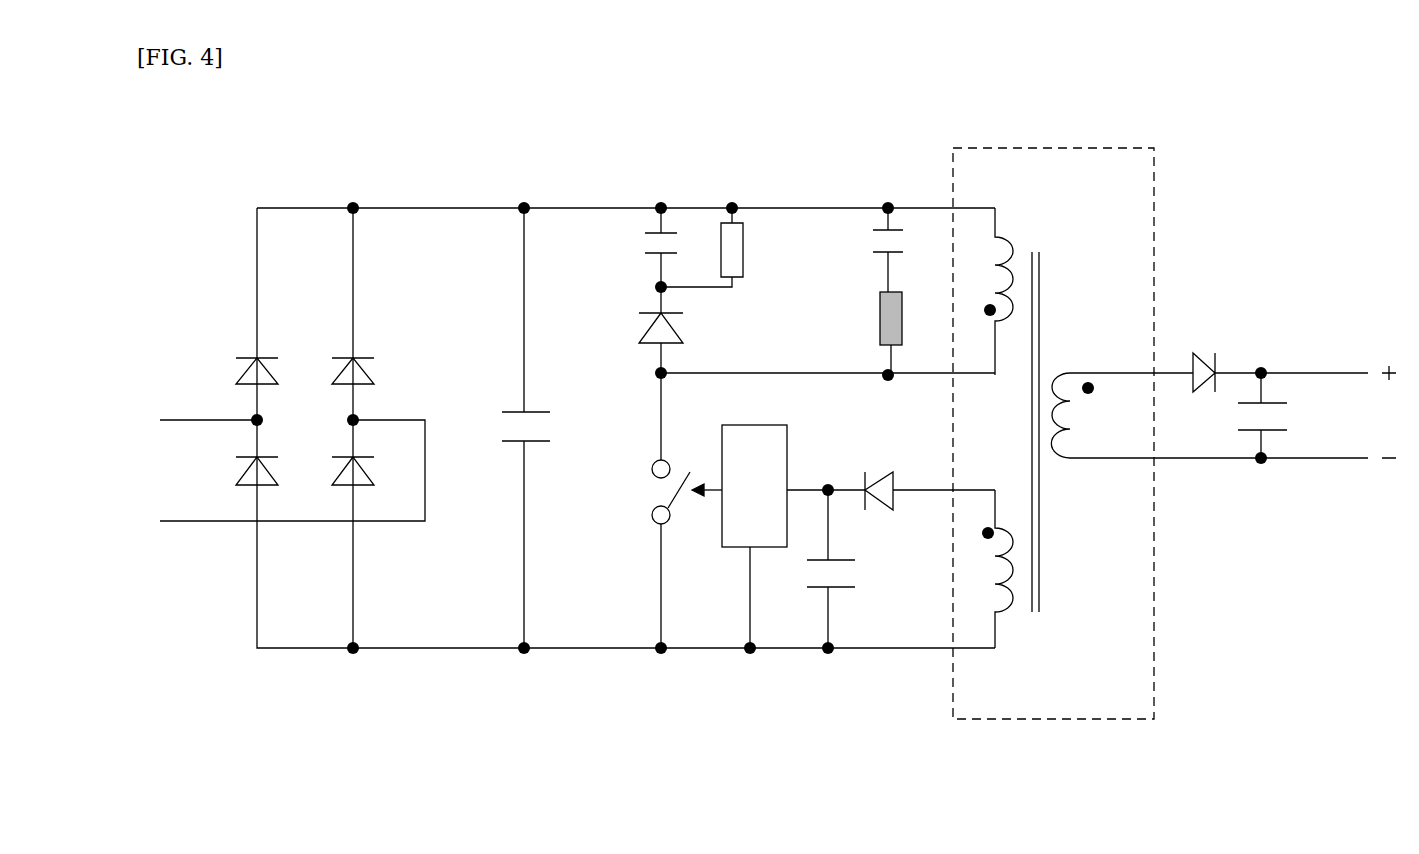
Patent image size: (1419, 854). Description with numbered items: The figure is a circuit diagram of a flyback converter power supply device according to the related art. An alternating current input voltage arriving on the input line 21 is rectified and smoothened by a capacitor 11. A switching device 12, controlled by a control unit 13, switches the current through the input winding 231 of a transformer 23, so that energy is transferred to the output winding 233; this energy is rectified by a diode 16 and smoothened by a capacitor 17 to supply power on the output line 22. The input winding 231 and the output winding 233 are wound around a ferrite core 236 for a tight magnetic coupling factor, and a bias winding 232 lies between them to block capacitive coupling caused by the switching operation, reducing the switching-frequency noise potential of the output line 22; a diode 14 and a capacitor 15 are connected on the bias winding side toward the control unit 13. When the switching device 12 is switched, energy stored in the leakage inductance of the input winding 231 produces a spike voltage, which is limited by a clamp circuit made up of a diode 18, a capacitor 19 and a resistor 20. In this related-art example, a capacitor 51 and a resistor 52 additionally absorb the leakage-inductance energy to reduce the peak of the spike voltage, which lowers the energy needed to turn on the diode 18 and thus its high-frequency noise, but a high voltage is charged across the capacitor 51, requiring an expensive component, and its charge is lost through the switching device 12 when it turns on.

The capacitor 11 is at (501, 452).
The switching device 12 is at (638, 472).
The control unit 13 is at (722, 555).
The diode 14 is at (873, 462).
The capacitor 15 is at (807, 605).
The diode 16 is at (1213, 342).
The capacitor 17 is at (1288, 417).
The diode 18 is at (642, 352).
The capacitor 19 is at (638, 243).
The resistor 20 is at (737, 283).
The input line 21 is at (460, 653).
The output line 22 is at (1303, 467).
The transformer 23 is at (945, 150).
The capacitor 51 is at (867, 243).
The resistor 52 is at (870, 317).
The input winding 231 is at (1012, 238).
The bias winding 232 is at (983, 602).
The output winding 233 is at (1065, 448).
The ferrite core 236 is at (1038, 624).